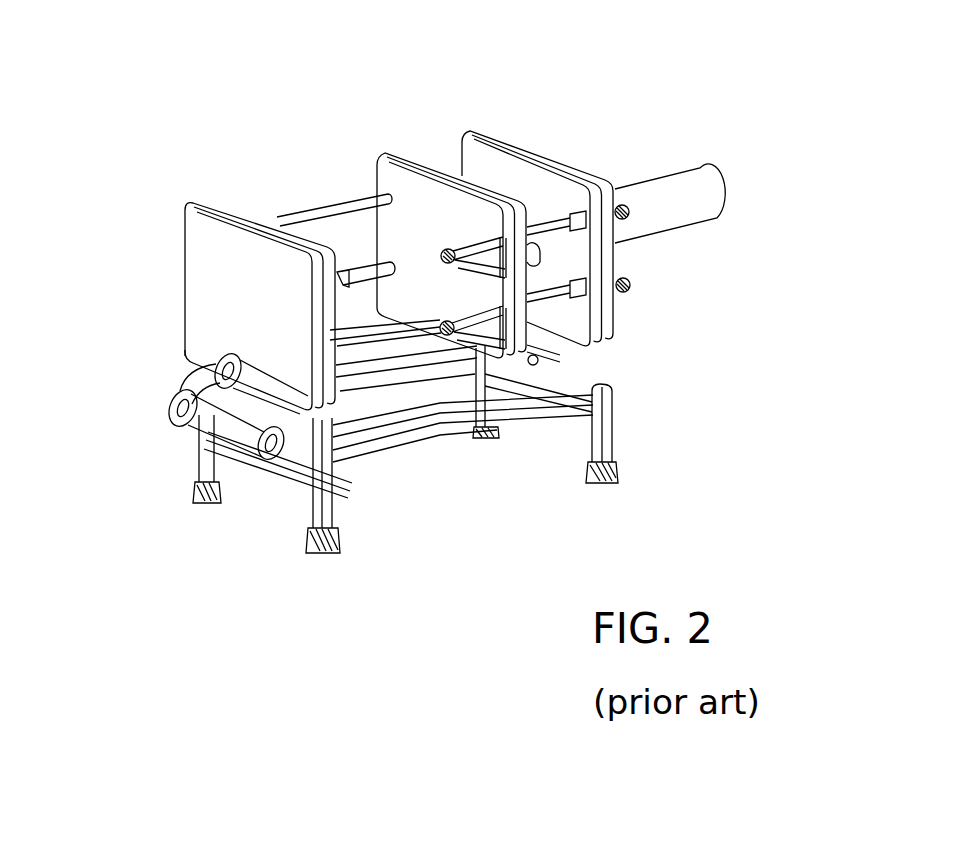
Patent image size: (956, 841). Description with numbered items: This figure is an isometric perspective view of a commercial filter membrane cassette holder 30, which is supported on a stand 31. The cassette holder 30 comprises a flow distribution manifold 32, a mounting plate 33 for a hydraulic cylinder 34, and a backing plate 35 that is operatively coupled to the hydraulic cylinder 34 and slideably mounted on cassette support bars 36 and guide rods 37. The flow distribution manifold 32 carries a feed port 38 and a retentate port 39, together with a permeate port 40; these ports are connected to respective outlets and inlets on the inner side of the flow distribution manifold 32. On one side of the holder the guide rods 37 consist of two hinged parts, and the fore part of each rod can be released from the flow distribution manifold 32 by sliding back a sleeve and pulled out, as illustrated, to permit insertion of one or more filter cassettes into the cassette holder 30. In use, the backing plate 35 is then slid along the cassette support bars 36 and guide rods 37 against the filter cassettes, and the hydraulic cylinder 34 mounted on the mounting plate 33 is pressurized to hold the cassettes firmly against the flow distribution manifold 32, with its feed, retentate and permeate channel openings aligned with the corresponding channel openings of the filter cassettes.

The cassette holder 30 is at (220, 179).
The stand 31 is at (605, 418).
The flow distribution manifold 32 is at (200, 268).
The mounting plate 33 is at (522, 170).
The hydraulic cylinder 34 is at (672, 177).
The backing plate 35 is at (413, 200).
The cassette support bars 36 is at (377, 375).
The guide rods 37 is at (340, 212).
The feed port 38 is at (262, 462).
The retentate port 39 is at (184, 435).
The permeate port 40 is at (218, 353).